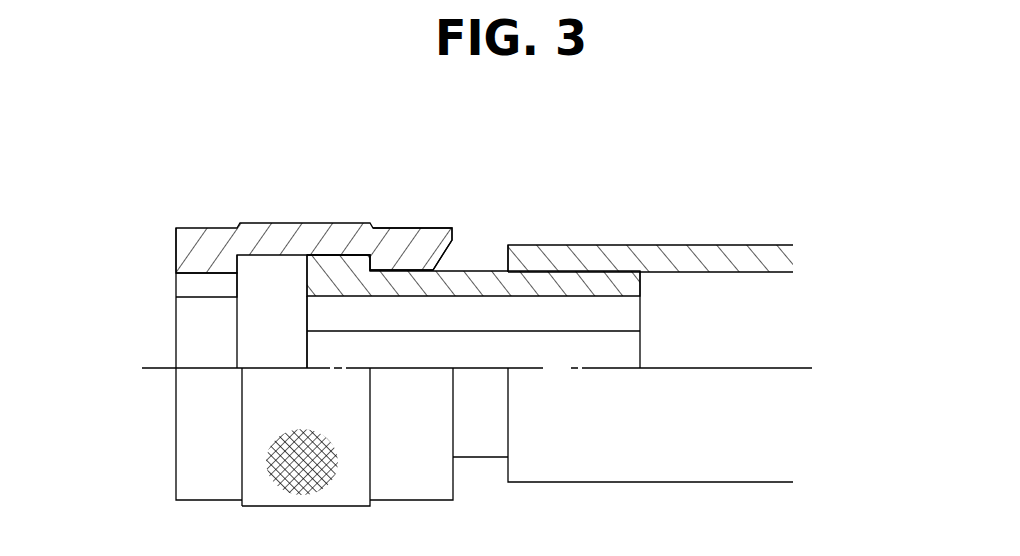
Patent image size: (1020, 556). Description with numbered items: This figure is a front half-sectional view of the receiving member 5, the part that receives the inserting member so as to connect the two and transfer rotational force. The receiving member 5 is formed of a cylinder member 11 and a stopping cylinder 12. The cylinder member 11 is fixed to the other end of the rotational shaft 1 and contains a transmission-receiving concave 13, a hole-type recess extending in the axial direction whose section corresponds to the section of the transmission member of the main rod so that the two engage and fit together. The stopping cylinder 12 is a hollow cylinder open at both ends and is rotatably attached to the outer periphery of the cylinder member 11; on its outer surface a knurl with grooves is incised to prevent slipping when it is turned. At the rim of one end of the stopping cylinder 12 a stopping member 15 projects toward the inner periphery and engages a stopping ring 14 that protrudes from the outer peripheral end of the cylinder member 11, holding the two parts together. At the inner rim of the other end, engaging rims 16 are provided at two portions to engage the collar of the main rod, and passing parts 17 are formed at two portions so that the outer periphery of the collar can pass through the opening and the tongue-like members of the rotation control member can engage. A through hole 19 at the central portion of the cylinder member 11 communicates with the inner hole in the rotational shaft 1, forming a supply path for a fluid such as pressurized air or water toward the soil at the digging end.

The rotational shaft 1 is at (717, 243).
The receiving member 5 is at (637, 223).
The cylinder member 11 is at (475, 283).
The stopping cylinder 12 is at (270, 240).
The transmission-receiving concave 13 is at (512, 350).
The stopping ring 14 is at (360, 263).
The stopping member 15 is at (390, 253).
The engaging rim 16 is at (193, 282).
The passing part 17 is at (220, 327).
The through hole 19 is at (260, 330).